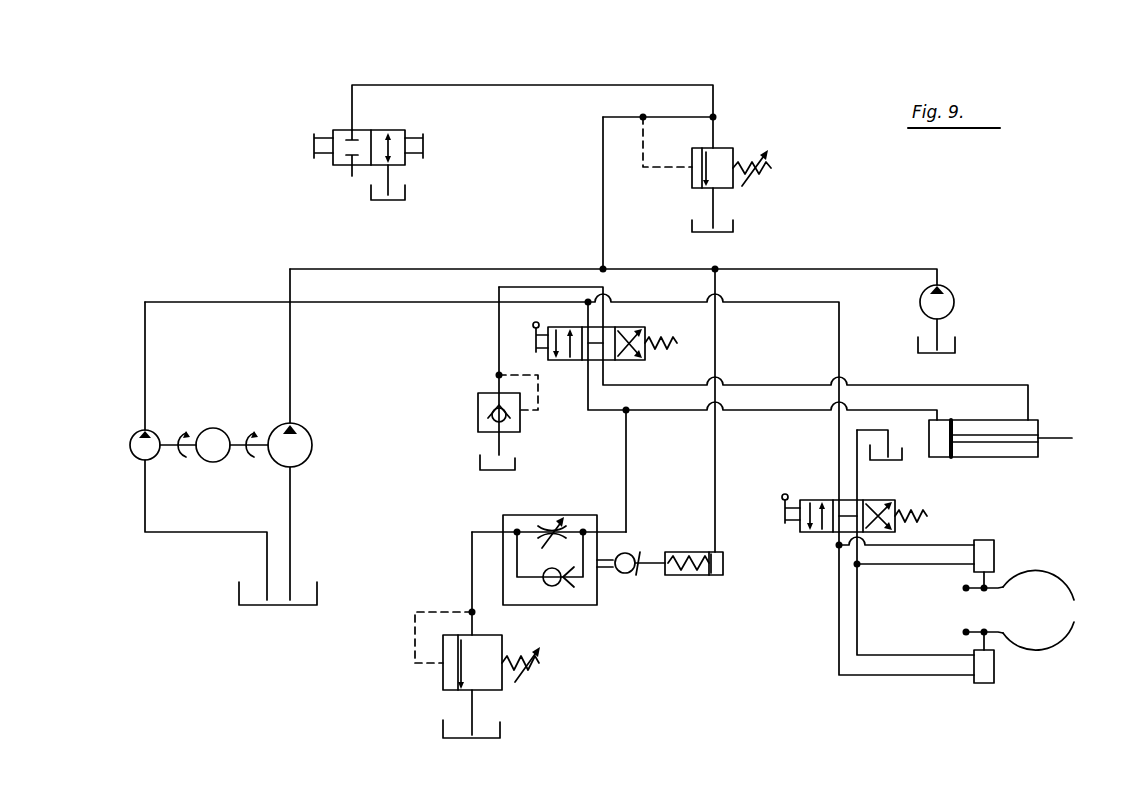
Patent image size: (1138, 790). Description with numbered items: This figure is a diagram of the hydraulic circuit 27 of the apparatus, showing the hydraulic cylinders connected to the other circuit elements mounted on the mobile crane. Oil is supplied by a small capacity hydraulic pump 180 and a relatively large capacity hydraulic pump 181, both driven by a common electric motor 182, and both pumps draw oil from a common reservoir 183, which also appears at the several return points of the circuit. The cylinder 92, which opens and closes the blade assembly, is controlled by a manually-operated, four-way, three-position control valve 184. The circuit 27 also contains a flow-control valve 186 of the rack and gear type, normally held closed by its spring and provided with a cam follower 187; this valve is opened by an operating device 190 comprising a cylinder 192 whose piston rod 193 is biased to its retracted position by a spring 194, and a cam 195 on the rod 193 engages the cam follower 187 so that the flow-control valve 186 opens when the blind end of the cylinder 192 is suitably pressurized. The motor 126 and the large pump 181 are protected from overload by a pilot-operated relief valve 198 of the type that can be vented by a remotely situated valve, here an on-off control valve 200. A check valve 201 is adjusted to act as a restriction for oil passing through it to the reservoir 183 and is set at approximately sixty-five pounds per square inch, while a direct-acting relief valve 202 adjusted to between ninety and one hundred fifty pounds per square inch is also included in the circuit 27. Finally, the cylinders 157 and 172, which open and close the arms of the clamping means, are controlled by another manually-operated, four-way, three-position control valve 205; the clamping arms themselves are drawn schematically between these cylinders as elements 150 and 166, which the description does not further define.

The circuit 27 is at (246, 171).
The on-off control valve 200 is at (397, 135).
The reservoir 183 is at (406, 196).
The relief valve 198 is at (723, 147).
The motor 126 is at (955, 300).
The control valve 184 is at (633, 330).
The check valve 201 is at (478, 406).
The hydraulic pump 180 is at (130, 442).
The electric motor 182 is at (213, 463).
The hydraulic pump 181 is at (312, 441).
The cylinder 92 is at (990, 420).
The control valve 205 is at (822, 483).
The flow-control valve 186 is at (573, 606).
The cam follower 187 is at (629, 553).
The cam 195 is at (639, 576).
The piston rod 193 is at (650, 566).
The operating device 190 is at (728, 564).
The spring 194 is at (705, 552).
The cylinder 192 is at (706, 577).
The relief valve 202 is at (443, 678).
The cylinder 157 is at (990, 548).
The brake drum 150 is at (1040, 573).
The brake shoe 166 is at (1050, 650).
The cylinder 172 is at (990, 675).